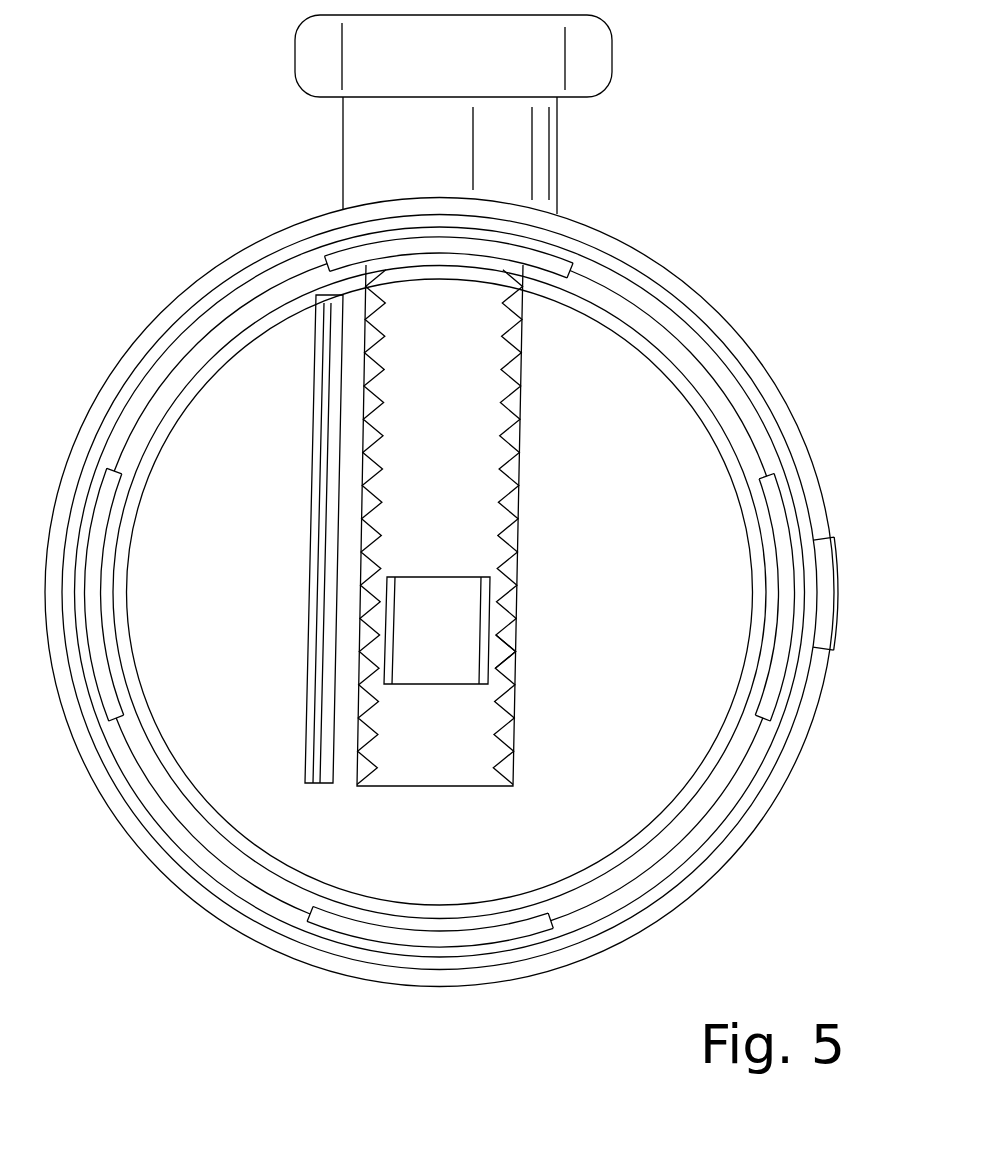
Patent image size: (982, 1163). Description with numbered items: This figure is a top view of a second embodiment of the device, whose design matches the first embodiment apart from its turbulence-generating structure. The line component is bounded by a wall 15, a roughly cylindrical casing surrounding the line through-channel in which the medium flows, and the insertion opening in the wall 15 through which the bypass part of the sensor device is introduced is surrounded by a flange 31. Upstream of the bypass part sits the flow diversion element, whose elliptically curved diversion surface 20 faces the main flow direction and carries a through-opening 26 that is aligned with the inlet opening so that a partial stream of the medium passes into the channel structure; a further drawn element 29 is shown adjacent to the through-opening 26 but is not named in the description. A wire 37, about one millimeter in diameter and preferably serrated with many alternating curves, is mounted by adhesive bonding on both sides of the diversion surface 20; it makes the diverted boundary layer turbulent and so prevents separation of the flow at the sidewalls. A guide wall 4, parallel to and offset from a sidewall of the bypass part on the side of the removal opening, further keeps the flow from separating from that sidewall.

The guide wall 4 is at (325, 418).
The wall 15 is at (690, 274).
The diversion surface 20 is at (493, 525).
The through-opening 26 is at (468, 663).
The catch tooth 29 is at (500, 633).
The flange 31 is at (540, 158).
The wire 37 is at (565, 755).